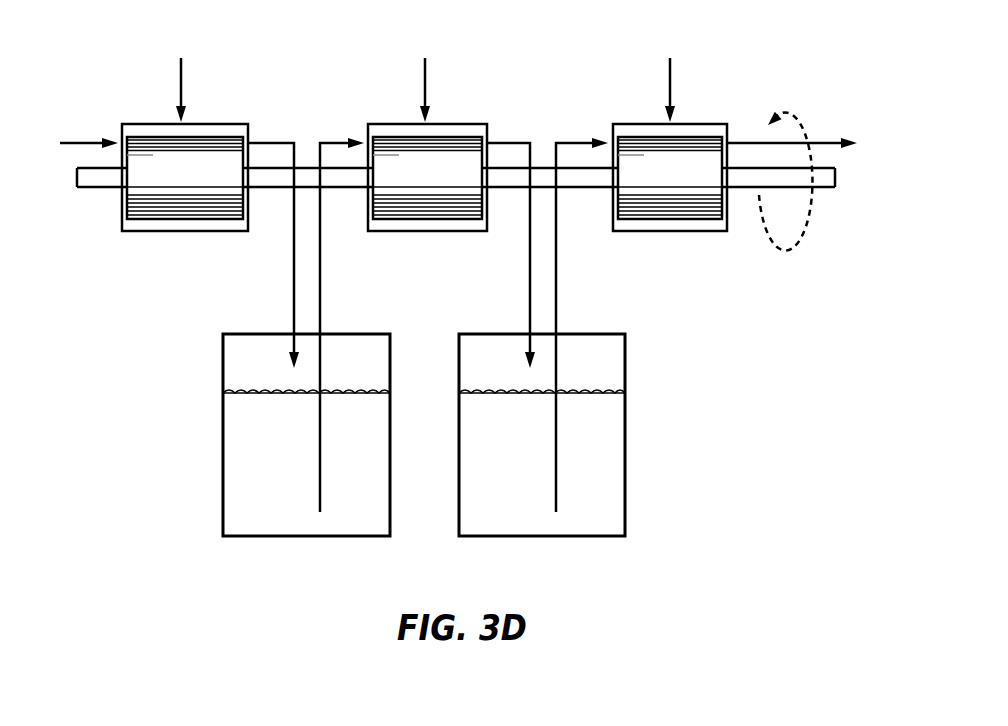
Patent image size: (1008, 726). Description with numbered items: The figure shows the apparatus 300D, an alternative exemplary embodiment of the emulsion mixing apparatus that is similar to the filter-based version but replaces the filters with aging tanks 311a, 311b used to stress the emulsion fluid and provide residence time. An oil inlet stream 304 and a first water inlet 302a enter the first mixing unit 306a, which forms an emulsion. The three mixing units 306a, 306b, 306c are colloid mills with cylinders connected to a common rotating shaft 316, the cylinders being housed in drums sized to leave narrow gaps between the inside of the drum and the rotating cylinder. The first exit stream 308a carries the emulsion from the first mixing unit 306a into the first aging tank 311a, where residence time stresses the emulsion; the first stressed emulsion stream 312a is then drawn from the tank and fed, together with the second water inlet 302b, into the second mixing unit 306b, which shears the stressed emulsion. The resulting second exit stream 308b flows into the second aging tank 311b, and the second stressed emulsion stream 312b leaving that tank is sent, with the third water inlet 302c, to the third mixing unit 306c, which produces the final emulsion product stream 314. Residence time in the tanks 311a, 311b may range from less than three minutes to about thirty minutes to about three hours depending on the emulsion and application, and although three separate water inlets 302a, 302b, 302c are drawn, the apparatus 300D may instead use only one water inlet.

The apparatus 300D is at (760, 52).
The water inlet 302a is at (179, 76).
The water inlet 302b is at (424, 76).
The water inlet 302c is at (669, 76).
The oil inlet stream 304 is at (69, 143).
The first mixing unit 306a is at (208, 229).
The second mixing unit 306b is at (452, 229).
The third mixing unit 306c is at (697, 229).
The first exit stream 308a is at (272, 140).
The second exit stream 308b is at (509, 140).
The aging tank 311a is at (223, 432).
The aging tank 311b is at (625, 432).
The first stressed emulsion stream 312a is at (336, 140).
The second stressed emulsion stream 312b is at (578, 140).
The final emulsion product stream 314 is at (812, 181).
The rotating shaft 316 is at (103, 190).